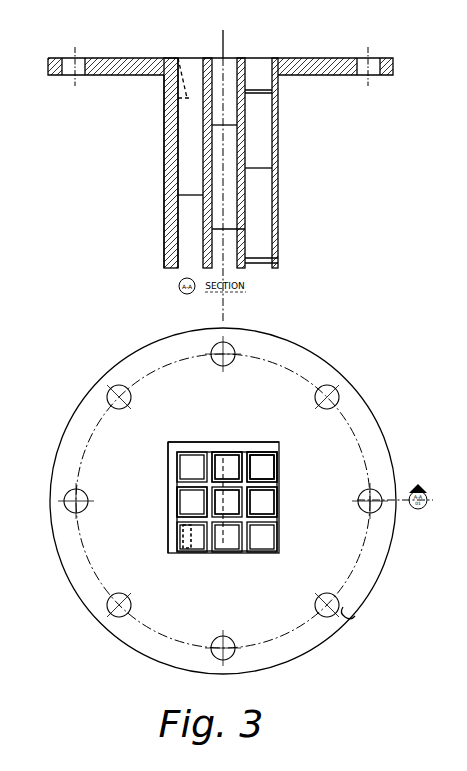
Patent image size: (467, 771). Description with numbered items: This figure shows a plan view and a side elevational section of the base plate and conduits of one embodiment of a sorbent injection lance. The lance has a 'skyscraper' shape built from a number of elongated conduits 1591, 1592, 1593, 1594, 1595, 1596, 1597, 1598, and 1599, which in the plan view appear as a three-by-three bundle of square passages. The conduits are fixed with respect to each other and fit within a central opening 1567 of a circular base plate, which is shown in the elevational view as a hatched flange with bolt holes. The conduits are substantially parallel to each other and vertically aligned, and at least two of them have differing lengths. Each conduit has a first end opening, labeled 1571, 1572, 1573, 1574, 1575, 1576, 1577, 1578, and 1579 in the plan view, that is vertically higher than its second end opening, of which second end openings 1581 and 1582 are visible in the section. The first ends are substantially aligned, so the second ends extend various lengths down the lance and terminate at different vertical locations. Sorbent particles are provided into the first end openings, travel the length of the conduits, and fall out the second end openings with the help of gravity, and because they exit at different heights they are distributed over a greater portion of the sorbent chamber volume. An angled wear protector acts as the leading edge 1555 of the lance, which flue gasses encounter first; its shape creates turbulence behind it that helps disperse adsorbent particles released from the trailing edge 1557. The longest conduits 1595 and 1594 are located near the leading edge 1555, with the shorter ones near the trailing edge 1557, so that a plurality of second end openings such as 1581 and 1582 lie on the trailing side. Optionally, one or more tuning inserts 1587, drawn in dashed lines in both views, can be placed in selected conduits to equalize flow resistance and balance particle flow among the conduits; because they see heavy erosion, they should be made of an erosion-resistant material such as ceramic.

The leading edge 1555 is at (155, 430).
The trailing edge 1557 is at (313, 587).
The central opening 1567 is at (93, 58).
The first end opening 1571 is at (265, 58).
The first end opening 1572 is at (228, 567).
The first end opening 1573 is at (193, 58).
The first end opening 1574 is at (178, 505).
The first end opening 1575 is at (178, 469).
The first end opening 1576 is at (268, 468).
The first end opening 1577 is at (277, 503).
The first end opening 1578 is at (223, 437).
The first end opening 1579 is at (278, 437).
The second end opening 1581 is at (268, 165).
The second end opening 1582 is at (226, 229).
The tuning insert 1587 is at (177, 88).
The conduit 1591 is at (260, 113).
The conduit 1592 is at (222, 153).
The conduit 1593 is at (190, 218).
The conduit 1594 is at (177, 542).
The conduit 1595 is at (177, 478).
The conduit 1596 is at (241, 497).
The conduit 1597 is at (297, 527).
The conduit 1598 is at (226, 453).
The conduit 1599 is at (268, 453).